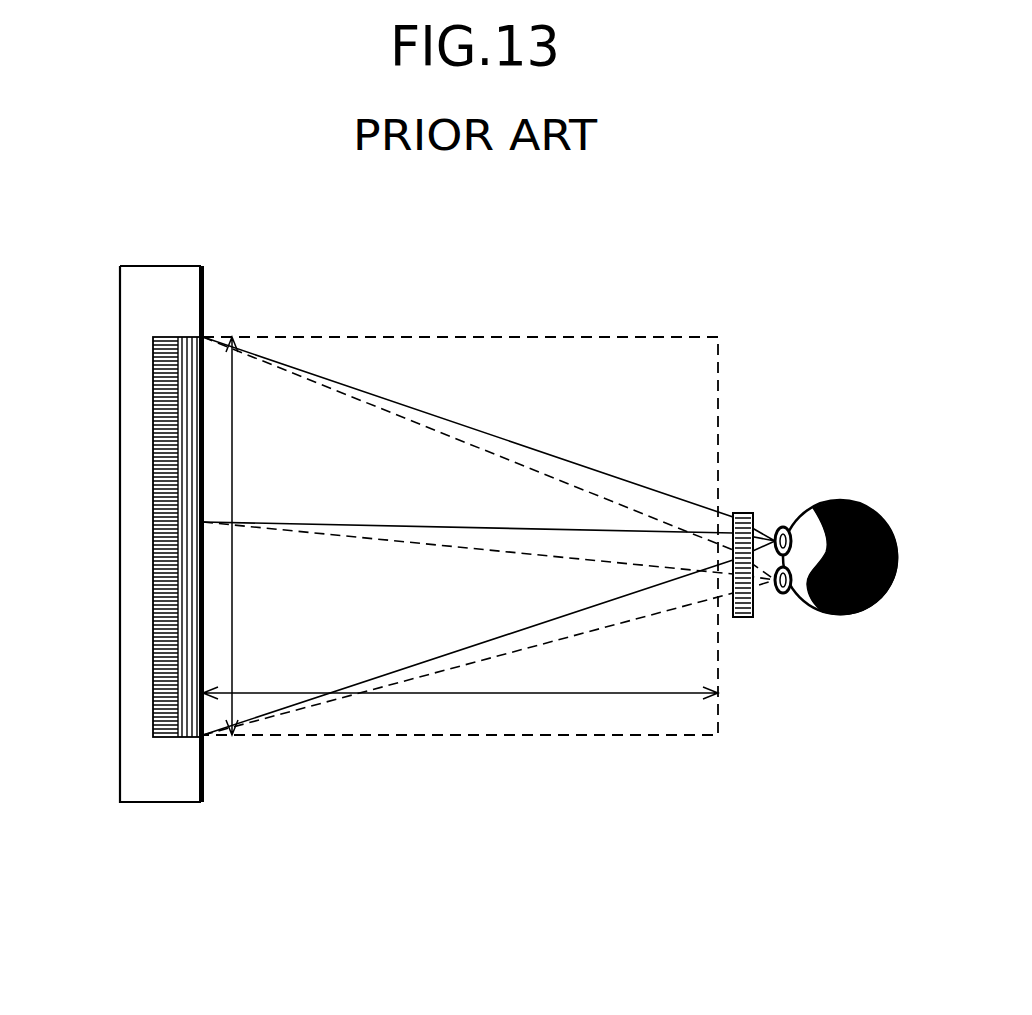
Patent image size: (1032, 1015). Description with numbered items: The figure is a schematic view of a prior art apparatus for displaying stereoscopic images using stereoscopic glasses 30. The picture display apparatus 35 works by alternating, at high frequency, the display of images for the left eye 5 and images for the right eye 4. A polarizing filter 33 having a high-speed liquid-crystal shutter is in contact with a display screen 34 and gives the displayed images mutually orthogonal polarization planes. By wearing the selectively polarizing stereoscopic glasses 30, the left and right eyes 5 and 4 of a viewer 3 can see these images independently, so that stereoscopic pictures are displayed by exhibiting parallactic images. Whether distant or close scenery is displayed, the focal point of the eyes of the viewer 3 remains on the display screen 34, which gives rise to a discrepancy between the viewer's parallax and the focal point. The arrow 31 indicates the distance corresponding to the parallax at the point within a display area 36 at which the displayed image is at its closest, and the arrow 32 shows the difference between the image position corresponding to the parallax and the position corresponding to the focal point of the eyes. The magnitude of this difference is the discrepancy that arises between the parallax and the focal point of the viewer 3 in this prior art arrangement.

The viewer 3 is at (856, 500).
The right eye 4 is at (780, 524).
The left eye 5 is at (784, 603).
The stereoscopic glasses 30 is at (737, 512).
The arrow 31 is at (232, 483).
The arrow 32 is at (500, 694).
The polarizing filter 33 is at (200, 335).
The display screen 34 is at (152, 682).
The picture display apparatus 35 is at (172, 803).
The display area 36 is at (668, 735).